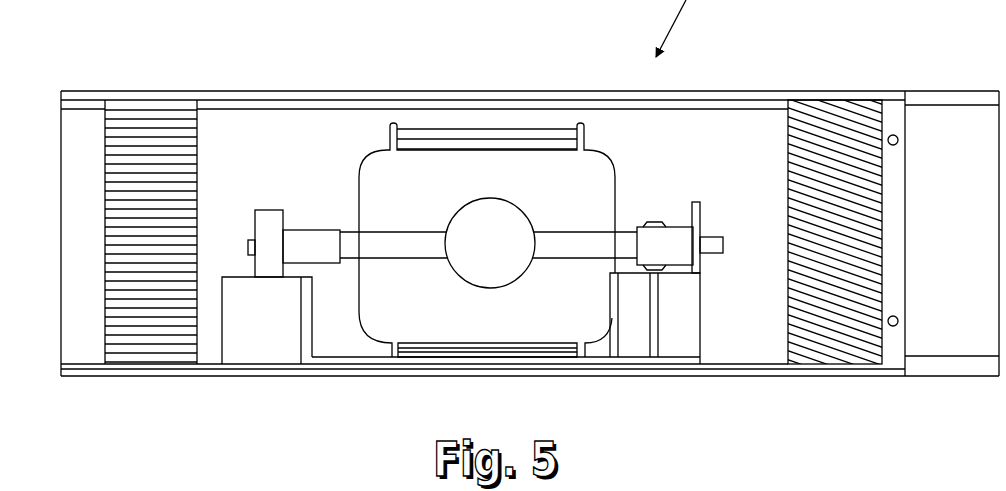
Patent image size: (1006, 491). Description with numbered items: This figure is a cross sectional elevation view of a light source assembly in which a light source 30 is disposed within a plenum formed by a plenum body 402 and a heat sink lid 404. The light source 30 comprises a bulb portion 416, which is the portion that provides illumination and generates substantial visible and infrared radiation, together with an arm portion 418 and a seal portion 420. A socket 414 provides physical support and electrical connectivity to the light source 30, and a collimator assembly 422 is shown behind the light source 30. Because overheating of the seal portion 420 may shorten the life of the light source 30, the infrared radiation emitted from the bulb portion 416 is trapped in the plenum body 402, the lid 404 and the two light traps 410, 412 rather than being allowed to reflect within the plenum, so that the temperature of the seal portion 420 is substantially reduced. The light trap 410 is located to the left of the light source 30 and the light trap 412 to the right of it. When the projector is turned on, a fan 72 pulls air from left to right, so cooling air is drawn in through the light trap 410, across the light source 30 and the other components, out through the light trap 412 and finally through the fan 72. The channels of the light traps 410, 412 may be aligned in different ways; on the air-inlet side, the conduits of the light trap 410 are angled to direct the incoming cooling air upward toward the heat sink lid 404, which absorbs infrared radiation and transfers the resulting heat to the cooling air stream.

The light source 30 is at (438, 283).
The fan 72 is at (966, 242).
The plenum body 402 is at (228, 380).
The lid 404 is at (514, 90).
The light trap 410 is at (161, 106).
The light trap 412 is at (820, 100).
The socket 414 is at (283, 332).
The bulb portion 416 is at (509, 262).
The arm portion 418 is at (592, 235).
The seal portion 420 is at (684, 257).
The collimator assembly 422 is at (506, 329).